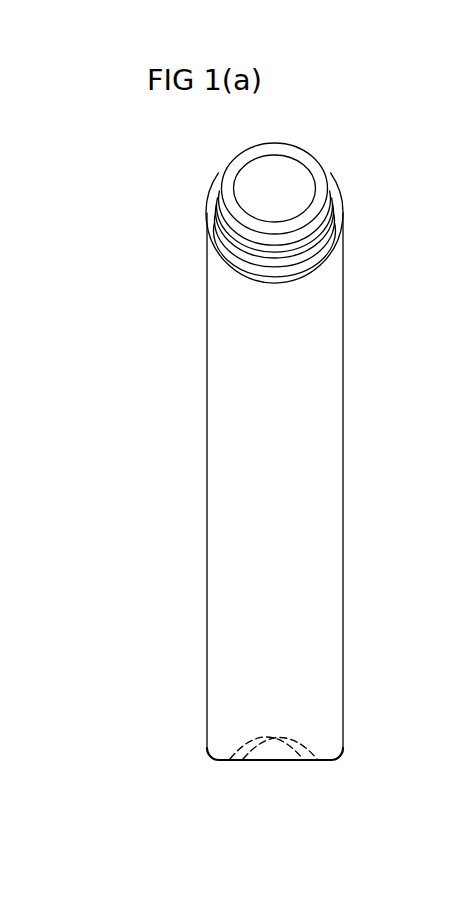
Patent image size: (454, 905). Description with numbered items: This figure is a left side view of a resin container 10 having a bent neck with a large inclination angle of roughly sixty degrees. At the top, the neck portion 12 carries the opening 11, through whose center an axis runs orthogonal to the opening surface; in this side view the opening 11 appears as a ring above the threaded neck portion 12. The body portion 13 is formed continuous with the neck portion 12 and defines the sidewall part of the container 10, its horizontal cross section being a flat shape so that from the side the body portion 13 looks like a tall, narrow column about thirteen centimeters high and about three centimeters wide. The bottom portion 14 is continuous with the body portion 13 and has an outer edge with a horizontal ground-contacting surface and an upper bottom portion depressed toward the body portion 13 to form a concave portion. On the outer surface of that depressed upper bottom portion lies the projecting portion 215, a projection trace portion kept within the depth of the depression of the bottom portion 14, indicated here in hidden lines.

The container 10 is at (275, 469).
The opening 11 is at (283, 173).
The neck portion 12 is at (213, 250).
The body portion 13 is at (225, 578).
The bottom portion 14 is at (222, 762).
The projecting portion 215 is at (287, 760).